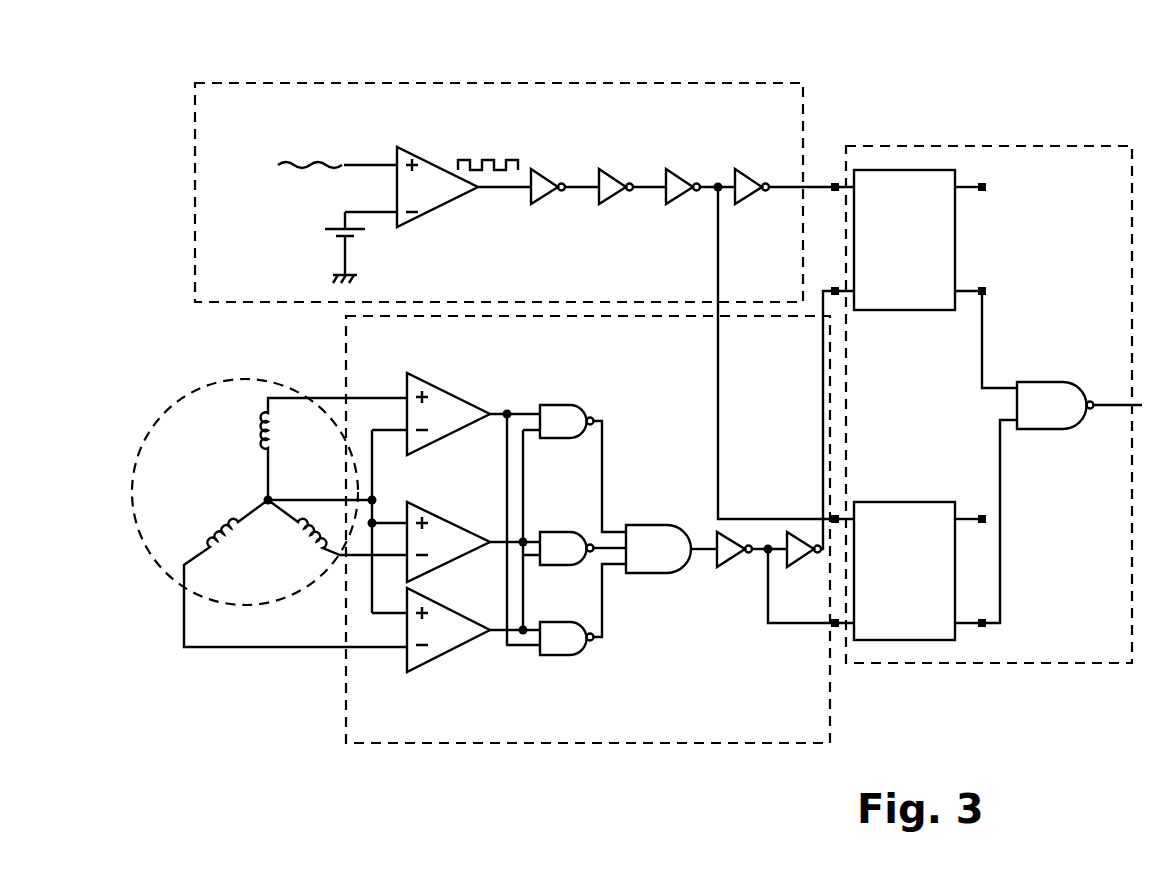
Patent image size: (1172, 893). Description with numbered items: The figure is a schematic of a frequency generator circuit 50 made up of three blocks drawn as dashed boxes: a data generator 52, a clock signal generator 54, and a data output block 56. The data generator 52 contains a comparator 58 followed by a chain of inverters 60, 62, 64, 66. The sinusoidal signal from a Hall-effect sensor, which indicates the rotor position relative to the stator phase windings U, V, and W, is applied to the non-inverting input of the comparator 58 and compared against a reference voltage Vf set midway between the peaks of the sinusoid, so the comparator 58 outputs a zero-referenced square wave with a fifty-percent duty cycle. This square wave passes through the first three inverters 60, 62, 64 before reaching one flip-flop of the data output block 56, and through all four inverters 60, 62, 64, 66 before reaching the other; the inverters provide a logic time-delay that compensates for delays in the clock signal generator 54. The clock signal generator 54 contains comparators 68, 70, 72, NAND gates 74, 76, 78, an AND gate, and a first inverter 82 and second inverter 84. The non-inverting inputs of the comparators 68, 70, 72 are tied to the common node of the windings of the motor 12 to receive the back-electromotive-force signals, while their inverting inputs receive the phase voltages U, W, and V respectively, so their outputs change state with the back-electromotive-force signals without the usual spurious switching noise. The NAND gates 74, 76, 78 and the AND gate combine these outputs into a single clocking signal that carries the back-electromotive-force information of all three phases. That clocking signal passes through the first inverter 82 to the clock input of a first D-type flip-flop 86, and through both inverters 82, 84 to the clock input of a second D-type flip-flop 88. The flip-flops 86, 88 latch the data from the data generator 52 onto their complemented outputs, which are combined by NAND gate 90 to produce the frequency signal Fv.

The motor 12 is at (143, 432).
The frequency generator circuit 50 is at (722, 70).
The data generator 52 is at (806, 123).
The clock signal generator 54 is at (346, 688).
The data output block 56 is at (972, 145).
The comparator 58 is at (437, 166).
The inverter 60 is at (548, 166).
The inverter 62 is at (620, 166).
The inverter 64 is at (684, 166).
The inverter 66 is at (755, 166).
The comparator 68 is at (458, 394).
The comparator 70 is at (447, 518).
The comparator 72 is at (455, 650).
The NAND gate 74 is at (575, 405).
The NAND gate 76 is at (561, 530).
The NAND gate 78 is at (562, 657).
The first inverter 82 is at (732, 557).
The second inverter 84 is at (788, 566).
The first D-type flip-flop 86 is at (905, 502).
The second D-type flip-flop 88 is at (960, 252).
The NAND gate 90 is at (1053, 381).